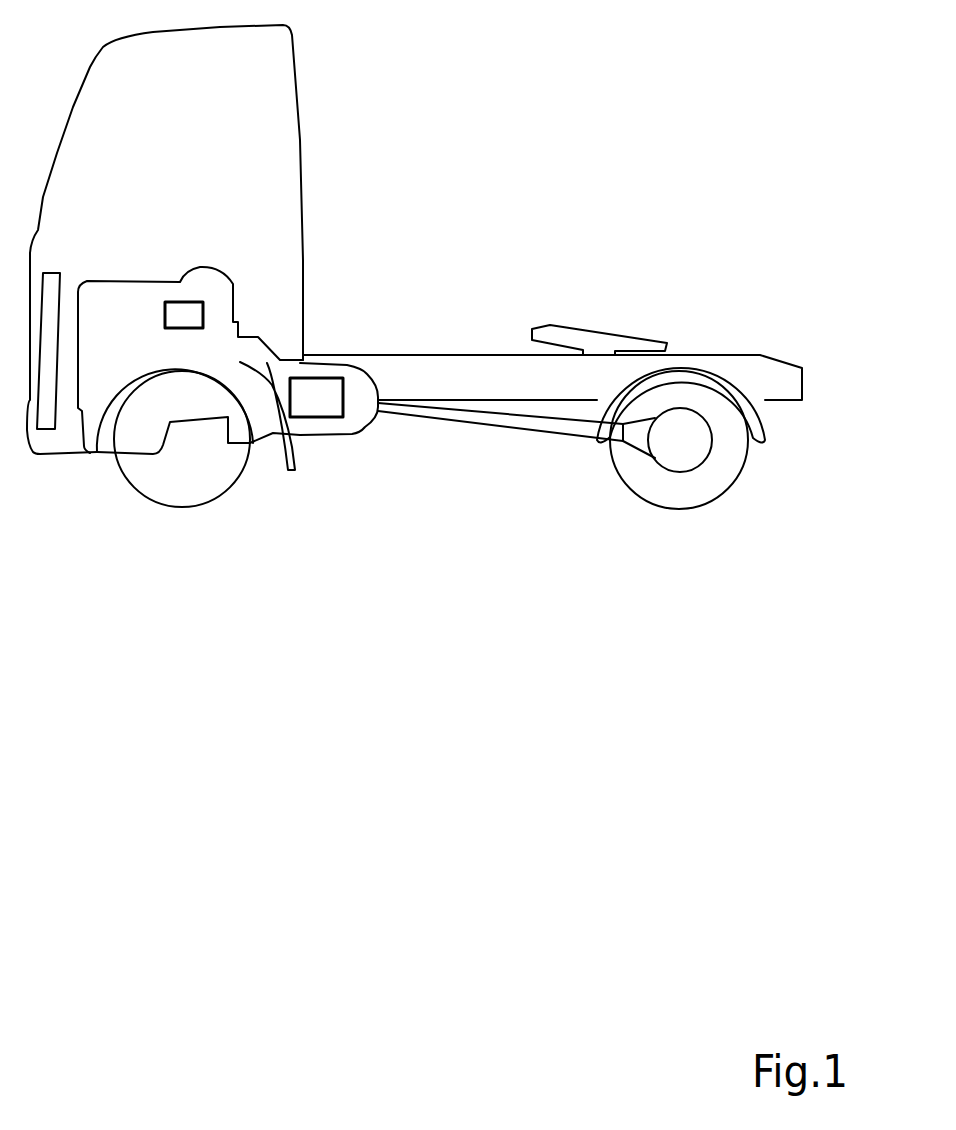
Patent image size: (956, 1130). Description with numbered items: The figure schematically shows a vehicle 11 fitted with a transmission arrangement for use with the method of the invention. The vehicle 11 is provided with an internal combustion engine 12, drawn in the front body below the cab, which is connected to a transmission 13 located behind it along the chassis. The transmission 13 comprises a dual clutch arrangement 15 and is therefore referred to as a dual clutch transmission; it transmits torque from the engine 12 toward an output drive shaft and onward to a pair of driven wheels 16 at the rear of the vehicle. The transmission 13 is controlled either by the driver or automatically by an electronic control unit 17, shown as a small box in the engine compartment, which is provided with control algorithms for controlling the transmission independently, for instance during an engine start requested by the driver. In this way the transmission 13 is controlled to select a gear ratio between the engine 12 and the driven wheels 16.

The vehicle 11 is at (287, 122).
The internal combustion engine 12 is at (132, 280).
The transmission 13 is at (368, 402).
The dual clutch arrangement 15 is at (325, 392).
The driven wheels 16 is at (710, 480).
The electronic control unit 17 is at (190, 312).